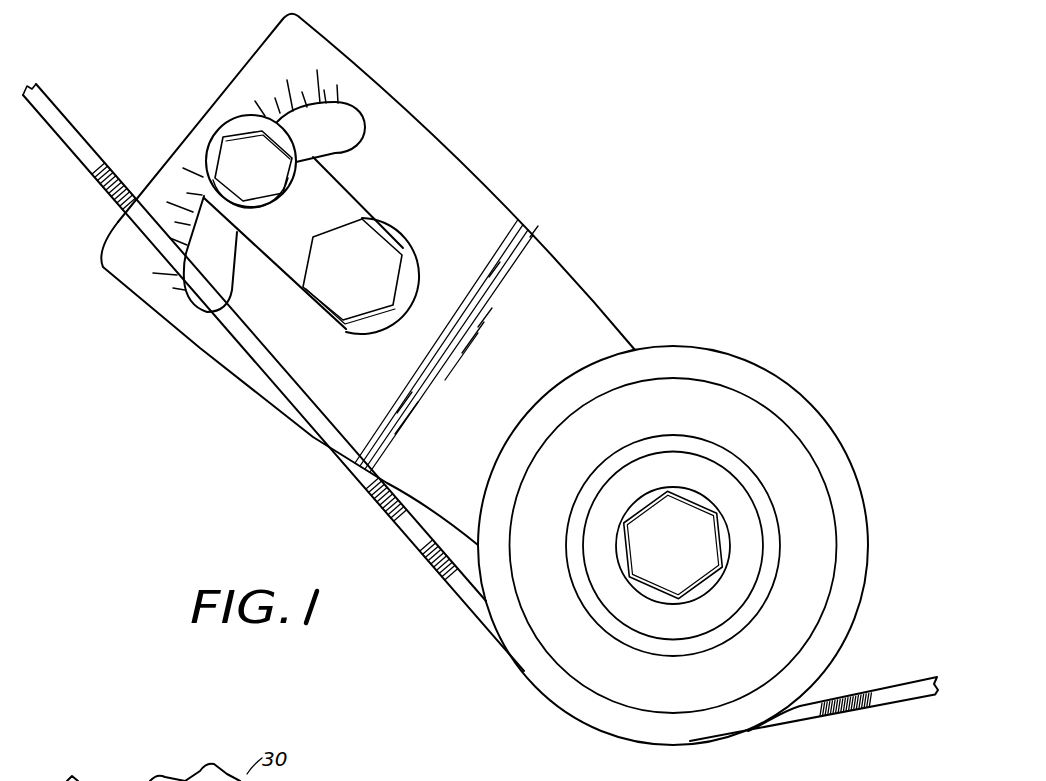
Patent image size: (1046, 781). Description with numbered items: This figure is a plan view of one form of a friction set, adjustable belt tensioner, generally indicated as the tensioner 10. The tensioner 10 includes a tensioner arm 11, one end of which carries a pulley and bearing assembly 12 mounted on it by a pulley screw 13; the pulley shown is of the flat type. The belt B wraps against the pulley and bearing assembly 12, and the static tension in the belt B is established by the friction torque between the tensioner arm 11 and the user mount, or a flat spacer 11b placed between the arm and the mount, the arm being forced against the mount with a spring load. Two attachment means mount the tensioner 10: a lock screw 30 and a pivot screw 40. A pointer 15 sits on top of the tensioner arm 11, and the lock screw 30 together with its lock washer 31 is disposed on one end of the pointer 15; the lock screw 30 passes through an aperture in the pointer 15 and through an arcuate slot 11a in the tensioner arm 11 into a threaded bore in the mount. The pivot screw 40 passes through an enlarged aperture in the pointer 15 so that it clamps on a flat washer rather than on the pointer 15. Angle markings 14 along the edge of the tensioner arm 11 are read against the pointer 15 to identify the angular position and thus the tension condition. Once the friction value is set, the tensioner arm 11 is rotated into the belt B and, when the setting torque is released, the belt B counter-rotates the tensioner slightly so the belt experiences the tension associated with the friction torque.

The tensioner 10 is at (550, 223).
The tensioner arm 11 is at (591, 307).
The arcuate slot 11a is at (362, 118).
The flat spacer 11b is at (126, 780).
The pulley and bearing assembly 12 is at (840, 445).
The pulley screw 13 is at (674, 534).
The angle markings 14 is at (318, 74).
The pointer 15 is at (344, 187).
The lock screw 30 is at (240, 160).
The lock washer 31 is at (200, 780).
The pivot screw 40 is at (375, 258).
The belt B is at (790, 716).